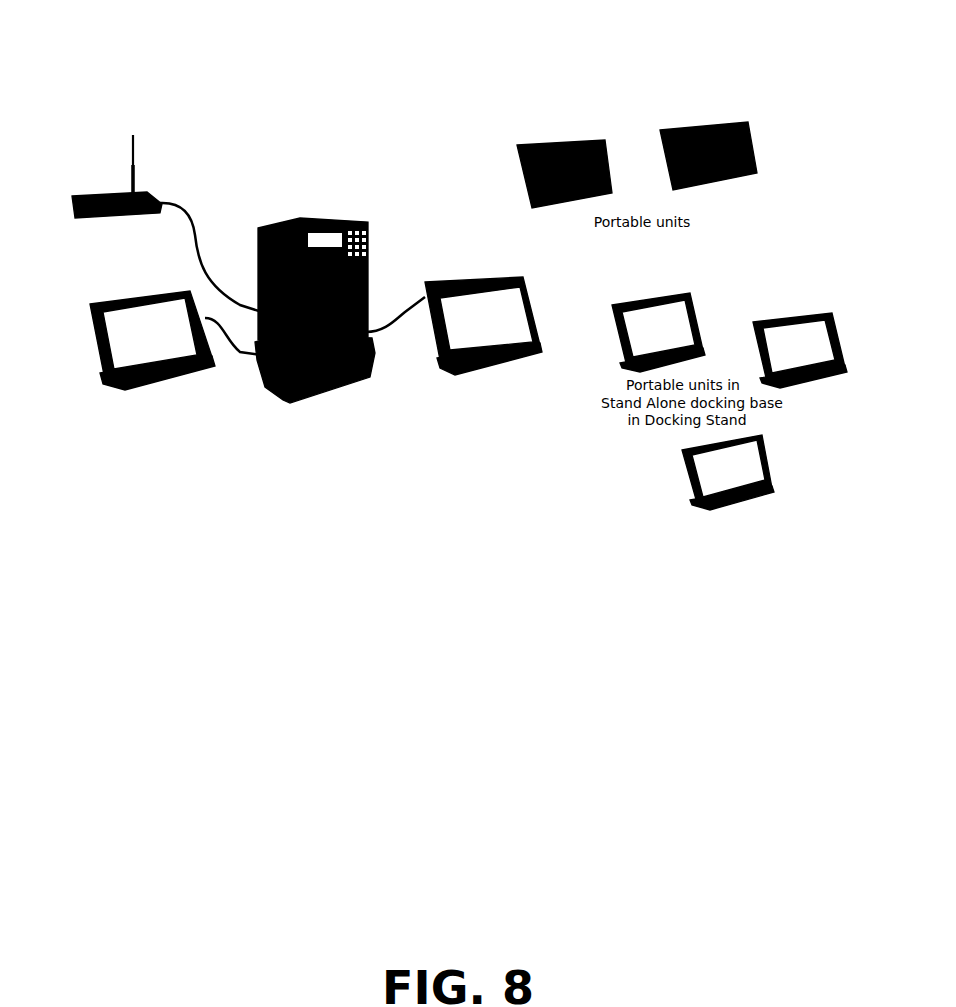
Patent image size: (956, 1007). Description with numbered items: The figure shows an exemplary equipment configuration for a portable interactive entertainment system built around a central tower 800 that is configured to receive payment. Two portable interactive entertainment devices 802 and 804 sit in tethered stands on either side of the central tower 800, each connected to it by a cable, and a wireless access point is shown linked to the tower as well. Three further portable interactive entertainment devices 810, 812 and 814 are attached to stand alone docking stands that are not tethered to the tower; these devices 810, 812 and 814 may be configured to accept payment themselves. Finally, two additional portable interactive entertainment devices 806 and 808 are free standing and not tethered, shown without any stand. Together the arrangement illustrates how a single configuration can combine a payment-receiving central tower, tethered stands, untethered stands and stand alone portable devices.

The central tower 800 is at (334, 198).
The portable interactive entertainment device 802 is at (112, 426).
The portable interactive entertainment device 804 is at (490, 392).
The portable interactive entertainment device 806 is at (580, 120).
The portable interactive entertainment device 808 is at (772, 120).
The portable interactive entertainment device 810 is at (727, 306).
The portable interactive entertainment device 812 is at (817, 419).
The portable interactive entertainment device 814 is at (659, 516).